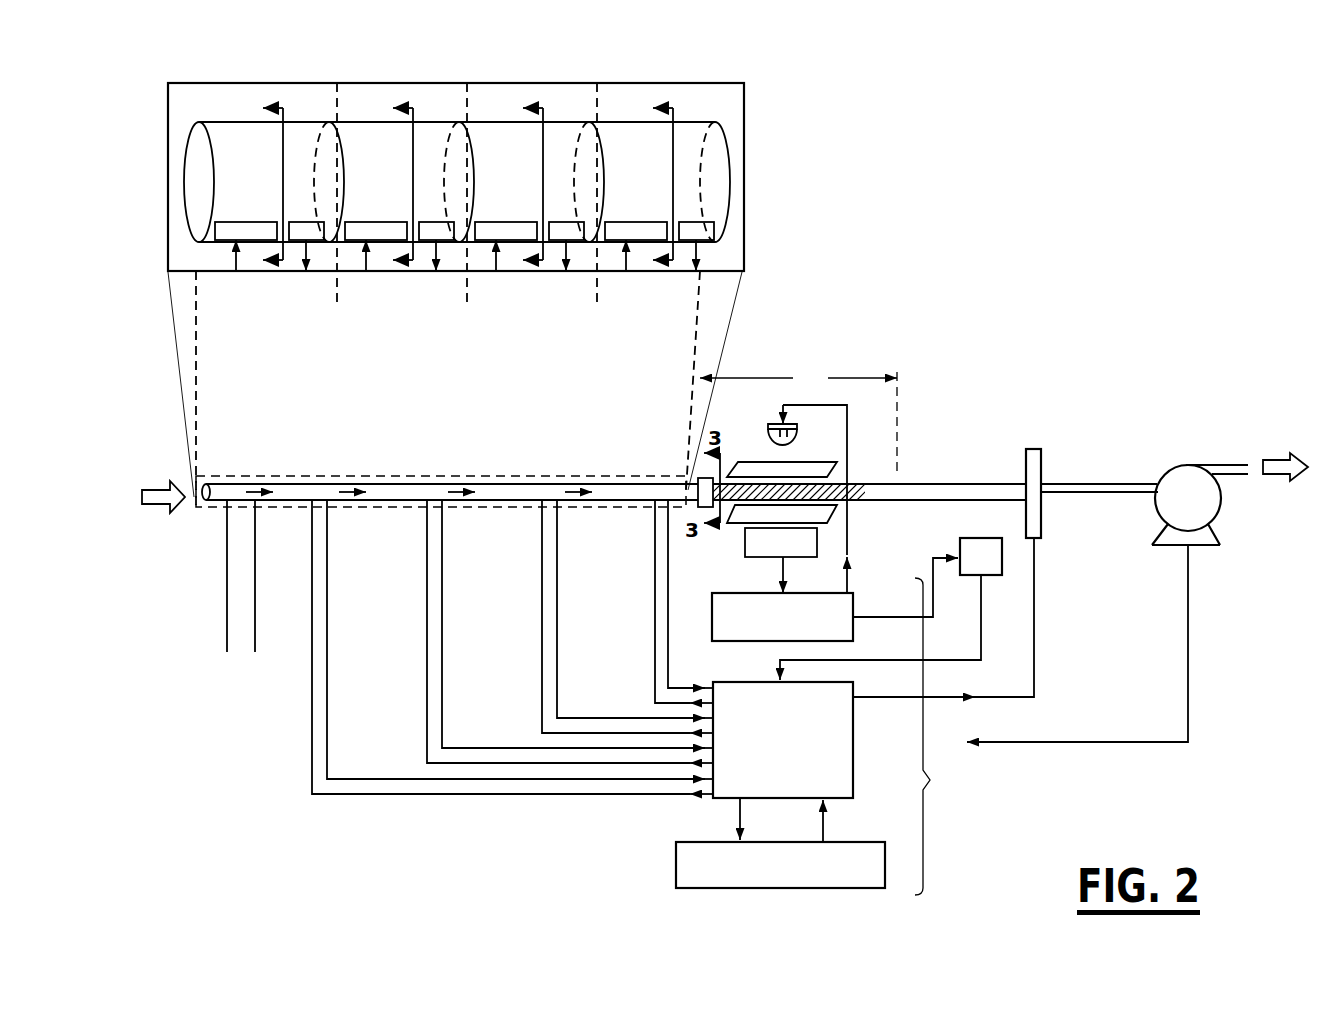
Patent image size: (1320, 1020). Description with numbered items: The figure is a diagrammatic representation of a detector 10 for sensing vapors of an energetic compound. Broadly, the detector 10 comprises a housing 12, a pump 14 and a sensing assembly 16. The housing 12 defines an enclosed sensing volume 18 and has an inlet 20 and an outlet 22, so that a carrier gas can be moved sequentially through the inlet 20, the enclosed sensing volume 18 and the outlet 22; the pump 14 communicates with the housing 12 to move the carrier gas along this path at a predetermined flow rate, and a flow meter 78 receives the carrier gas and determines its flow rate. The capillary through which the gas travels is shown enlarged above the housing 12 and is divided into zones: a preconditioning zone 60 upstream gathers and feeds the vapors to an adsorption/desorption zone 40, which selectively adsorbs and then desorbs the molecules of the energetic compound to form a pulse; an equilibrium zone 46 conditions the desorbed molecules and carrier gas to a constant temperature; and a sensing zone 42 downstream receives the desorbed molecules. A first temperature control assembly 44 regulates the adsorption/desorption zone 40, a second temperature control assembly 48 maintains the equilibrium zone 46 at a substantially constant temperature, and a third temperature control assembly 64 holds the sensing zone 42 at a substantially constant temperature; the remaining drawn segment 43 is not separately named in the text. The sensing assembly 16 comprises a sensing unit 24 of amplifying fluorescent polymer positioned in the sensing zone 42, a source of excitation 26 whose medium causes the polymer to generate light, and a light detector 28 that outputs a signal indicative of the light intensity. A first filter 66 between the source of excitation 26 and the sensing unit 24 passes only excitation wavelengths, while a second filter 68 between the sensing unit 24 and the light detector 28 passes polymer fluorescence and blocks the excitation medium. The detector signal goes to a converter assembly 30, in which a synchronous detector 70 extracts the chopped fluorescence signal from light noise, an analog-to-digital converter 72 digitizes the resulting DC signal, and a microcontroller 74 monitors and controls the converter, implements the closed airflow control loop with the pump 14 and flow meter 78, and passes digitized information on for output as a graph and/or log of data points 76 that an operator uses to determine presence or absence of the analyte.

The detector 10 is at (938, 369).
The housing 12 is at (395, 503).
The pump 14 is at (1222, 537).
The sensing assembly 16 is at (800, 493).
The enclosed sensing volume 18 is at (513, 490).
The inlet 20 is at (207, 505).
The outlet 22 is at (1250, 463).
The sensing unit 24 is at (872, 490).
The source of excitation 26 is at (767, 430).
The light detector 28 is at (743, 558).
The converter assembly 30 is at (932, 735).
The adsorption/desorption zone 40 is at (365, 168).
The sensing zone 42 is at (798, 421).
The third conduit segment 43 is at (495, 168).
The first temperature control assembly 44 is at (357, 243).
The equilibrium zone 46 is at (622, 168).
The second temperature control assembly 48 is at (613, 237).
The preconditioning zone 60 is at (226, 168).
The third temperature control assembly 64 is at (692, 507).
The first filter 66 is at (758, 458).
The second filter 68 is at (733, 527).
The synchronous detector 70 is at (858, 633).
The analog-to-digital converter 72 is at (1008, 570).
The microcontroller 74 is at (858, 771).
The graph and/or log of data points 76 is at (826, 893).
The flow meter 78 is at (1047, 528).